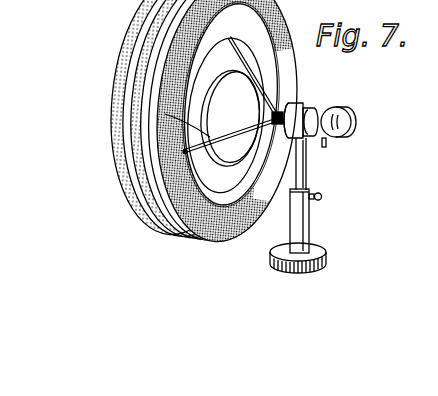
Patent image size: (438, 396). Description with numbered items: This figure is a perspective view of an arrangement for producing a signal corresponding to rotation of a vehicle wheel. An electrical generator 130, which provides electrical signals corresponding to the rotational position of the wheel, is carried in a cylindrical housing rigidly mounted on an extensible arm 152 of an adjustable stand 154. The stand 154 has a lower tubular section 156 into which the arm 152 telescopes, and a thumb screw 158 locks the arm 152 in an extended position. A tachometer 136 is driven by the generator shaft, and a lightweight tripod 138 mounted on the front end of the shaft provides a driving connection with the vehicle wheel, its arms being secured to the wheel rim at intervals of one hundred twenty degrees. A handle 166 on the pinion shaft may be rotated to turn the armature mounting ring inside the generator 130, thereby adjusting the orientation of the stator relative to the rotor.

The electrical generator 130 is at (300, 102).
The tachometer 136 is at (357, 118).
The lightweight tripod 138 is at (165, 114).
The extensible arm 152 is at (313, 173).
The adjustable stand 154 is at (287, 229).
The lower tubular section 156 is at (312, 216).
The thumb screw 158 is at (323, 197).
The handle 166 is at (327, 142).